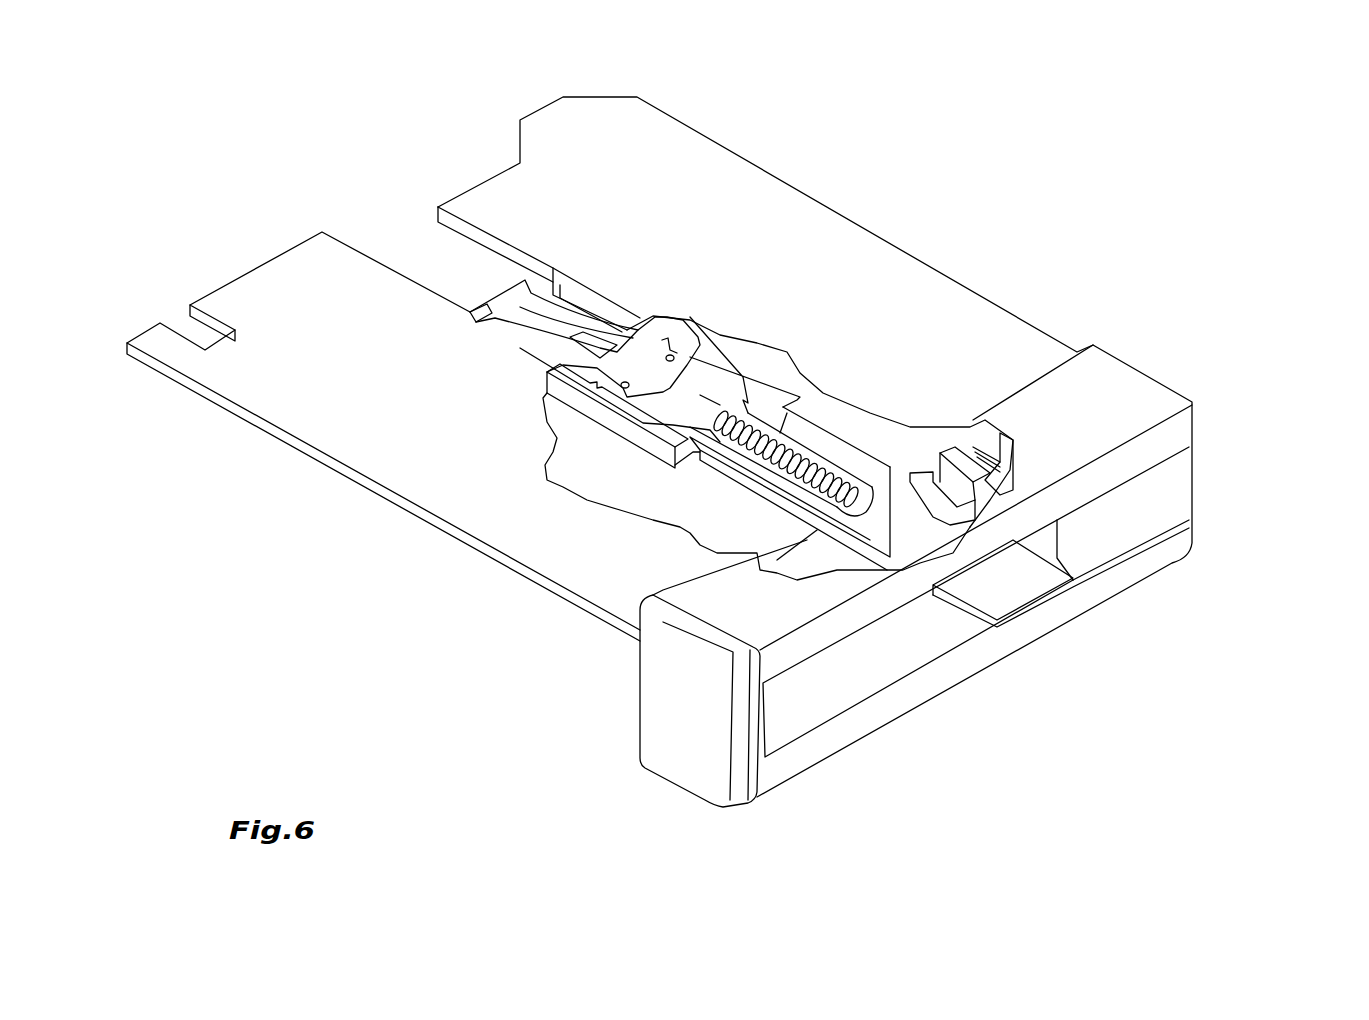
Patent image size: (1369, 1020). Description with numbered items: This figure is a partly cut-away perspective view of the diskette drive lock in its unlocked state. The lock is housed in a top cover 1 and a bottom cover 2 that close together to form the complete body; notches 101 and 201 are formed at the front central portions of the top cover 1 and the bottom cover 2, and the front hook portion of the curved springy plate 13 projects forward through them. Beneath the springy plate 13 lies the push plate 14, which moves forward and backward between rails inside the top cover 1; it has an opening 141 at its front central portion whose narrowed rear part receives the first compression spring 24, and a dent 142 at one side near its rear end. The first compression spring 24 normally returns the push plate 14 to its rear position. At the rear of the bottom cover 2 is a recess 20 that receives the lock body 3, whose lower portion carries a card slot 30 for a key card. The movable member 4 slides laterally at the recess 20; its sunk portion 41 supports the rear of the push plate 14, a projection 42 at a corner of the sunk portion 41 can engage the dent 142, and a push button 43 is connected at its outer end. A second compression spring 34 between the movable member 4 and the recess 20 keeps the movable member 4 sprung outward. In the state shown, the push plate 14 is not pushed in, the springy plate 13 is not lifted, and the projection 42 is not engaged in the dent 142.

The top cover 1 is at (687, 187).
The bottom cover 2 is at (1147, 567).
The lock body 3 is at (827, 700).
The movable member 4 is at (812, 555).
The curved springy plate 13 is at (475, 273).
The push plate 14 is at (695, 333).
The recess 20 is at (765, 713).
The first compression spring 24 is at (783, 430).
The card slot 30 is at (882, 560).
The second compression spring 34 is at (972, 420).
The sunk portion 41 is at (907, 677).
The projection 42 is at (945, 495).
The push button 43 is at (652, 708).
The notch 101 is at (429, 180).
The opening 141 is at (710, 400).
The dent 142 is at (970, 425).
The notch 201 is at (477, 275).